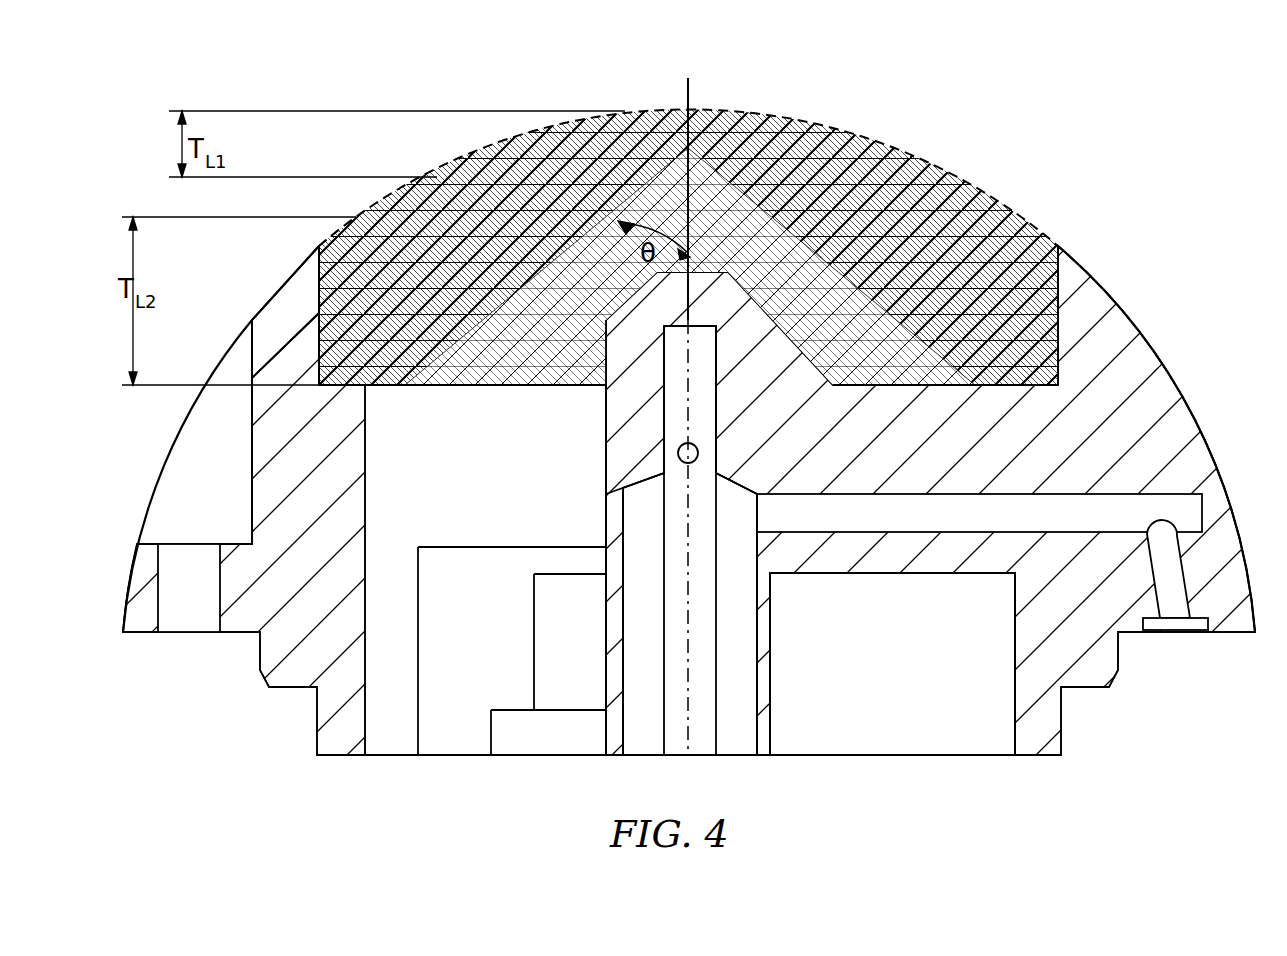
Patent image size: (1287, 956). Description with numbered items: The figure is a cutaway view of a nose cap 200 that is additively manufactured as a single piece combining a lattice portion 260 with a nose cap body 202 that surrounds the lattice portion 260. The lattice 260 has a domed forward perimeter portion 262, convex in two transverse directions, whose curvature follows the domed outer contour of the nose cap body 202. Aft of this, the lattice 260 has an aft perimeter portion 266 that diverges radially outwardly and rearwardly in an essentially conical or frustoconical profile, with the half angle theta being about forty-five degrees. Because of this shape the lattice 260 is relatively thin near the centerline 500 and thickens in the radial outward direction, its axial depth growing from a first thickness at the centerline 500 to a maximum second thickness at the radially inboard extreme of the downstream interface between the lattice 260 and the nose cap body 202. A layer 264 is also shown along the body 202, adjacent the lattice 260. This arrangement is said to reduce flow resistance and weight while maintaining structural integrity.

The nose cap 200 is at (1062, 152).
The nose cap body 202 is at (1100, 312).
The lattice portion 260 is at (688, 268).
The domed forward perimeter portion 262 is at (787, 121).
The outer layer 264 is at (282, 284).
The aft perimeter portion 266 is at (408, 352).
The centerline 500 is at (690, 93).